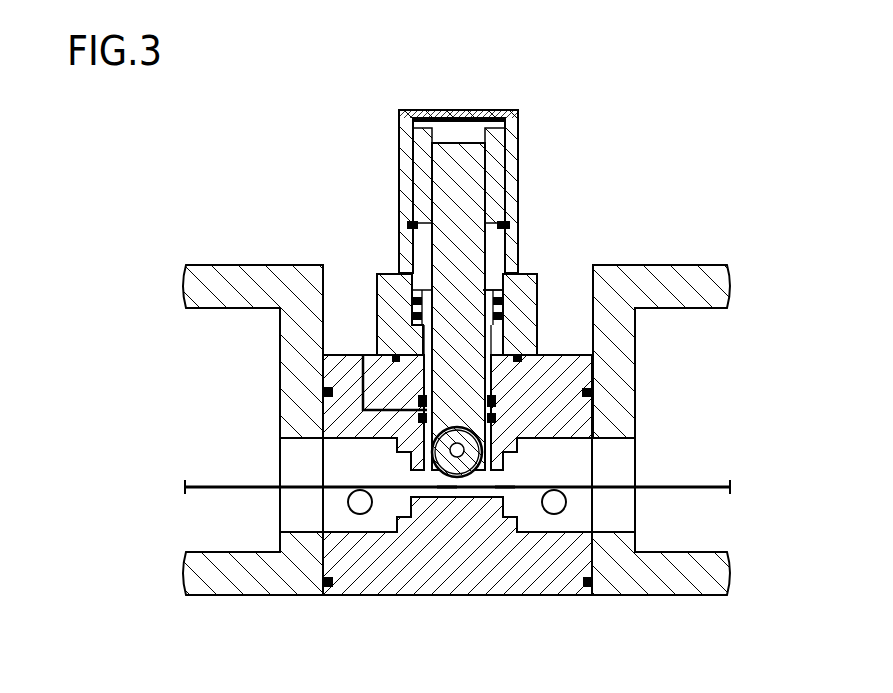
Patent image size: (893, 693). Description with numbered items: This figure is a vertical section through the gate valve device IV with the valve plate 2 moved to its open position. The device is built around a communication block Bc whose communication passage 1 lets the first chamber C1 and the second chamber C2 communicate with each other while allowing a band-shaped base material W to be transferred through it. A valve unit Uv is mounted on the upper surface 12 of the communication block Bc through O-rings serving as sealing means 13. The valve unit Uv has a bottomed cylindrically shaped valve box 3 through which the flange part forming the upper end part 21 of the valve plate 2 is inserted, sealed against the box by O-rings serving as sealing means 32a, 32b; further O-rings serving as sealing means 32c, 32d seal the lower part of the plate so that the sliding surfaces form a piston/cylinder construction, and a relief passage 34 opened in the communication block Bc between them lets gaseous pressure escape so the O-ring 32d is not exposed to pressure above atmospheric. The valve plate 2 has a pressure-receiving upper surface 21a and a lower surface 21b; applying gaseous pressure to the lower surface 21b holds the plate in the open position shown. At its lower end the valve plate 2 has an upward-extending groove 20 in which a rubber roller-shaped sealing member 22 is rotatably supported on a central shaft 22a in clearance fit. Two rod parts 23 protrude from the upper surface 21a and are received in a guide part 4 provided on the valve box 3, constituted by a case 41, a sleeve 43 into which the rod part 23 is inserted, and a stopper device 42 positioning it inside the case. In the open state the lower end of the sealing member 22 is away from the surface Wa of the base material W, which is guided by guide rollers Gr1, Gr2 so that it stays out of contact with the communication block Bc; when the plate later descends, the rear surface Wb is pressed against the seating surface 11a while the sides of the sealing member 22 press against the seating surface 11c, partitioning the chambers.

The communication passage 1 is at (346, 478).
The valve plate 2 is at (385, 405).
The valve box 3 is at (388, 303).
The guide part 4 is at (322, 95).
The seating surface 11a is at (490, 480).
The seating surface 11c is at (447, 500).
The upper surface 12 is at (343, 347).
The sealing means 13 is at (518, 362).
The groove 20 is at (393, 415).
The upper end part 21 is at (415, 278).
The upper surface 21a is at (493, 286).
The lower surface 21b is at (496, 400).
The sealing member 22 is at (465, 472).
The shaft 22a is at (458, 456).
The rod part 23 is at (462, 177).
The sealing means 32a is at (503, 302).
The sealing means 32b is at (503, 316).
The sealing means 32c is at (496, 327).
The sealing means 32d is at (508, 479).
The relief passage 34 is at (362, 401).
The case 41 is at (400, 115).
The stopper device 42 is at (407, 223).
The sleeve 43 is at (413, 168).
The communication block Bc is at (345, 570).
The first chamber C1 is at (230, 353).
The second chamber C2 is at (718, 355).
The guide roller Gr1 is at (352, 501).
The guide roller Gr2 is at (558, 501).
The base material W is at (704, 484).
The surface Wa is at (503, 488).
The rear surface Wb is at (447, 490).
The valve unit Uv is at (487, 102).
The gate valve device IV is at (500, 615).